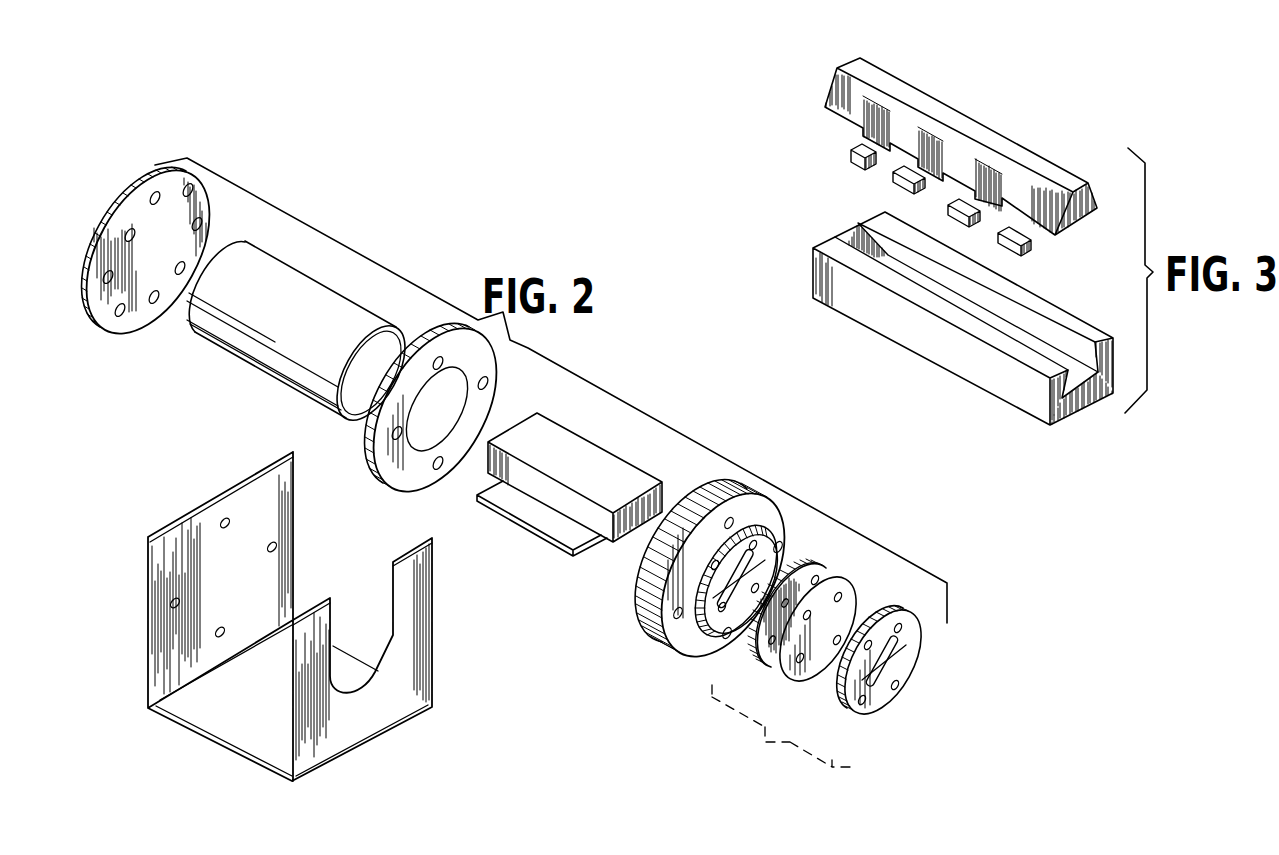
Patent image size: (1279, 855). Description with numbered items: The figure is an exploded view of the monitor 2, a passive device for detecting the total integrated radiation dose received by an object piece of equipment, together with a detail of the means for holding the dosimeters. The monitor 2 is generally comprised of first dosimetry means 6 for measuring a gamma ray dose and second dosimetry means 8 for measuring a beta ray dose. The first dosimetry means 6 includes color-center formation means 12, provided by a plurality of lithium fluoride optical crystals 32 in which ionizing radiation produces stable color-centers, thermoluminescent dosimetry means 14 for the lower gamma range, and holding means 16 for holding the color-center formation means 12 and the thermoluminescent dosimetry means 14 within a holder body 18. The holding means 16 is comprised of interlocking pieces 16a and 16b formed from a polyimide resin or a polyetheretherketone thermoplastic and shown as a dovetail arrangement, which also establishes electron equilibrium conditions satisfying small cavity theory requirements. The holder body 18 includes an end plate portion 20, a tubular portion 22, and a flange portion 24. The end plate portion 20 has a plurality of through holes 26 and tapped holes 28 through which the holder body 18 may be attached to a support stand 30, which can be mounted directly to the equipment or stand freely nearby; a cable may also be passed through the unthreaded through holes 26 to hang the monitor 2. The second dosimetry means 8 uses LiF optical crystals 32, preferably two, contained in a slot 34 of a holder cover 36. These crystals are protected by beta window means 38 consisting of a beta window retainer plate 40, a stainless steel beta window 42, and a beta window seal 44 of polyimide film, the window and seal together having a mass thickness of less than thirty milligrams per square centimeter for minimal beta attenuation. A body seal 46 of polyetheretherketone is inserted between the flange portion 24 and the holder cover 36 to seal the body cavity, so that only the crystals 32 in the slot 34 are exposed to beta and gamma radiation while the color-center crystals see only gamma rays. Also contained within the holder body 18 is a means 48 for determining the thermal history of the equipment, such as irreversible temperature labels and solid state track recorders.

In FIG. 2, the monitor 2 is at (598, 680).
In FIG. 3, the first dosimetry means 6 is at (939, 94).
In FIG. 2, the second dosimetry means 8 is at (935, 669).
In FIG. 3, the color-center formation means 12 is at (1027, 240).
In FIG. 3, the thermoluminescent dosimetry means 14 is at (858, 147).
In FIG. 2, the holding means 16 is at (578, 452).
In FIG. 3, the holding means 16 is at (829, 213).
In FIG. 3, the interlocking piece 16a is at (973, 133).
In FIG. 3, the interlocking piece 16b is at (893, 328).
In FIG. 2, the holder body 18 is at (224, 367).
In FIG. 2, the end plate portion 20 is at (165, 187).
In FIG. 2, the tubular portion 22 is at (272, 278).
In FIG. 2, the flange portion 24 is at (428, 477).
In FIG. 2, the through holes 26 is at (193, 197).
In FIG. 2, the tapped holes 28 is at (152, 308).
In FIG. 2, the support stand 30 is at (207, 722).
In FIG. 3, the lithium fluoride optical crystals 32 is at (945, 215).
In FIG. 2, the slot 34 is at (773, 555).
In FIG. 2, the holder cover 36 is at (688, 647).
In FIG. 2, the beta window means 38 is at (782, 726).
In FIG. 2, the beta window retainer plate 40 is at (863, 707).
In FIG. 2, the stainless steel beta window 42 is at (801, 682).
In FIG. 2, the beta window seal 44 is at (772, 666).
In FIG. 2, the body seal 46 is at (652, 573).
In FIG. 2, the means for determining a thermal history 48 is at (540, 517).